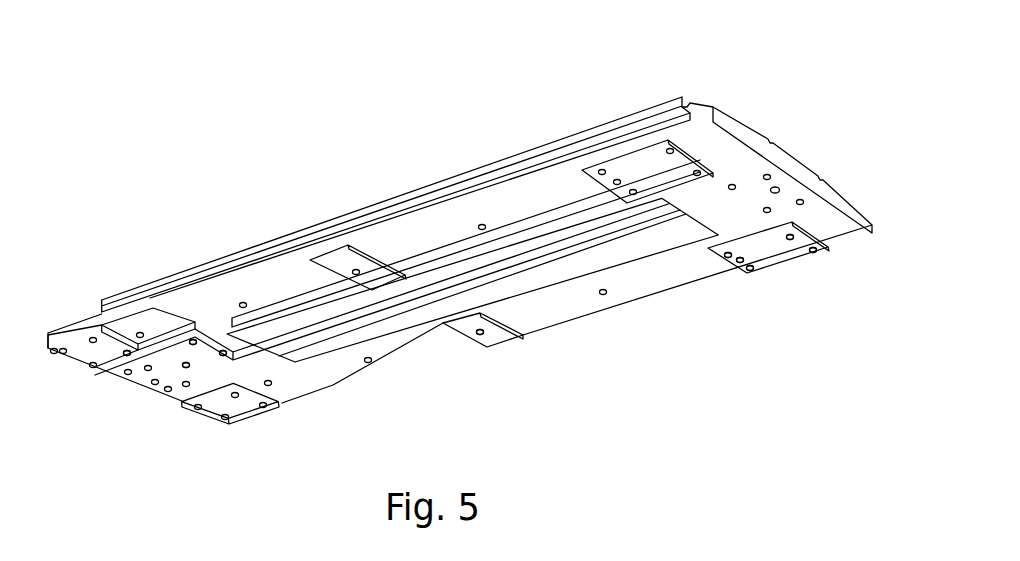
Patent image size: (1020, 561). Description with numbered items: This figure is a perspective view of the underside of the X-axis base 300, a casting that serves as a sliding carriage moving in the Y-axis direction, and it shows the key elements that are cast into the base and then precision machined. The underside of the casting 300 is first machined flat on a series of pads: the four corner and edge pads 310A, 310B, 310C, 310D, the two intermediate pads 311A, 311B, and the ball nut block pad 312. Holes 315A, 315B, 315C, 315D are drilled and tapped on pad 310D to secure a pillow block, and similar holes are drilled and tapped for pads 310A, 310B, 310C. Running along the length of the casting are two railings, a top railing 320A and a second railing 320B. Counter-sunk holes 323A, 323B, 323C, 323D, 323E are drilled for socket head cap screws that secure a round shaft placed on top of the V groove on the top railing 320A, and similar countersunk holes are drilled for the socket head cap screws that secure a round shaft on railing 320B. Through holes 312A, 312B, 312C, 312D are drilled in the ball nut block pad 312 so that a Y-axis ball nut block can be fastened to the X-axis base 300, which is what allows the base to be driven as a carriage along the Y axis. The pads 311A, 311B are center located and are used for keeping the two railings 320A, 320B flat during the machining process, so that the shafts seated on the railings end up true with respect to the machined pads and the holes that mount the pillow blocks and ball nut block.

The X-axis base 300 is at (740, 128).
The top railing 320A is at (555, 250).
The railing 320B is at (552, 141).
The pad 310A is at (88, 353).
The pad 310B is at (233, 407).
The pad 310C is at (653, 173).
The pad 310D is at (777, 256).
The pad 311A is at (372, 278).
The pad 311B is at (495, 337).
The ball nut block pad 312 is at (190, 355).
The through hole 312A is at (122, 364).
The through hole 312B is at (186, 368).
The through hole 312C is at (223, 351).
The through hole 312D is at (193, 338).
The hole 315A is at (722, 257).
The hole 315B is at (748, 272).
The hole 315C is at (814, 254).
The hole 315D is at (797, 228).
The counter-sunk hole 323A is at (737, 263).
The counter-sunk hole 323B is at (604, 295).
The counter-sunk hole 323C is at (478, 335).
The counter-sunk hole 323D is at (372, 363).
The counter-sunk hole 323E is at (271, 385).